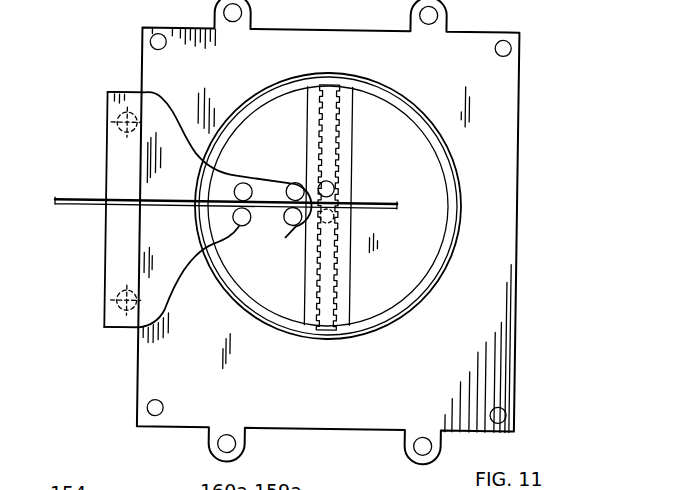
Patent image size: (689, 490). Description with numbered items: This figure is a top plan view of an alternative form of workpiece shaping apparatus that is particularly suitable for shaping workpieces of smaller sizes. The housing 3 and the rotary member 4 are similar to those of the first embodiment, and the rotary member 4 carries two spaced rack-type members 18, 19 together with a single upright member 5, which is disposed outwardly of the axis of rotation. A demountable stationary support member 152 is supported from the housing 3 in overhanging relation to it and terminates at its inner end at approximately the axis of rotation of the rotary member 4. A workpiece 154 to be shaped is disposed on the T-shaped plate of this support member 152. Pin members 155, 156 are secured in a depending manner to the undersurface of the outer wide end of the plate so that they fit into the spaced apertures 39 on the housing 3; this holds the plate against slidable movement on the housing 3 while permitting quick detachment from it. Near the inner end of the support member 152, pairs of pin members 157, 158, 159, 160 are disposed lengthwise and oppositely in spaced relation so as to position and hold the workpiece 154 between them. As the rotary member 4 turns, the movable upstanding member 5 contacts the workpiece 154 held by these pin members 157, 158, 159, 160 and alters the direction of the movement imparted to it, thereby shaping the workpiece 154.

The housing 3 is at (503, 117).
The rotary member 4 is at (430, 233).
The upright member 5 is at (328, 228).
The rack-type member 18 is at (309, 124).
The rack-type member 19 is at (351, 170).
The apertures 39 is at (112, 125).
The stationary support member 152 is at (184, 102).
The workpiece 154 is at (64, 207).
The pin member 155 is at (124, 92).
The pin member 156 is at (110, 300).
The pin member 157 is at (297, 183).
The pin member 158 is at (257, 163).
The pin member 159 is at (294, 224).
The pin member 160 is at (247, 222).